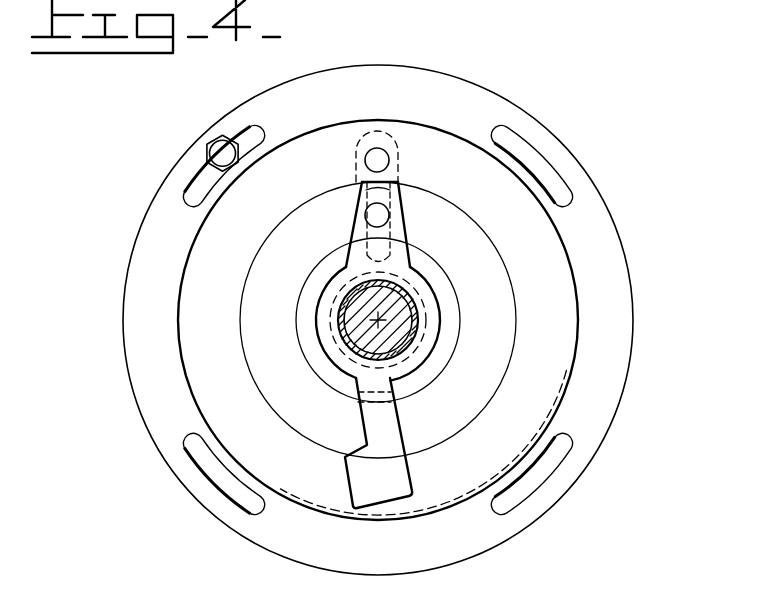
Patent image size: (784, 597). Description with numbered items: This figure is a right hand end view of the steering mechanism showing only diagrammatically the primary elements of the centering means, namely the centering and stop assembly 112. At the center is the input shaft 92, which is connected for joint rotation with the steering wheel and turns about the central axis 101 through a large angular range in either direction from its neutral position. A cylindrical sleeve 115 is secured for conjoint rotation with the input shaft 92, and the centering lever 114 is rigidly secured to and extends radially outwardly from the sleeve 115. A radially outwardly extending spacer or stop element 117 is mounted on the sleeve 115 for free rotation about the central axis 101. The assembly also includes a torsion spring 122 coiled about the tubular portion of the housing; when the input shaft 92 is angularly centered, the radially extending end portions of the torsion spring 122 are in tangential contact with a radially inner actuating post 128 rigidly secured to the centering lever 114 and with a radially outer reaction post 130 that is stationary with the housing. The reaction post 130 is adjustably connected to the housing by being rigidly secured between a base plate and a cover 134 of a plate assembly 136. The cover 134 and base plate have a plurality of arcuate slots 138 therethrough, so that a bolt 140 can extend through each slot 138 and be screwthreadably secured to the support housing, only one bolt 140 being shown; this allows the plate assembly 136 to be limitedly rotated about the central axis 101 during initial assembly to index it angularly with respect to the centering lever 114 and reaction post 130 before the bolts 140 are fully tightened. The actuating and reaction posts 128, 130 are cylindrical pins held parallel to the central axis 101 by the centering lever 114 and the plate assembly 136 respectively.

The input shaft 92 is at (398, 334).
The central axis 101 is at (368, 323).
The centering and stop assembly 112 is at (346, 477).
The centering lever 114 is at (340, 247).
The cylindrical sleeve 115 is at (397, 292).
The stop element 117 is at (391, 400).
The torsion spring 122 is at (305, 375).
The actuating post 128 is at (366, 213).
The reaction post 130 is at (362, 157).
The cover 134 is at (603, 253).
The plate assembly 136 is at (572, 240).
The arcuate slots 138 is at (555, 176).
The bolt 140 is at (220, 150).